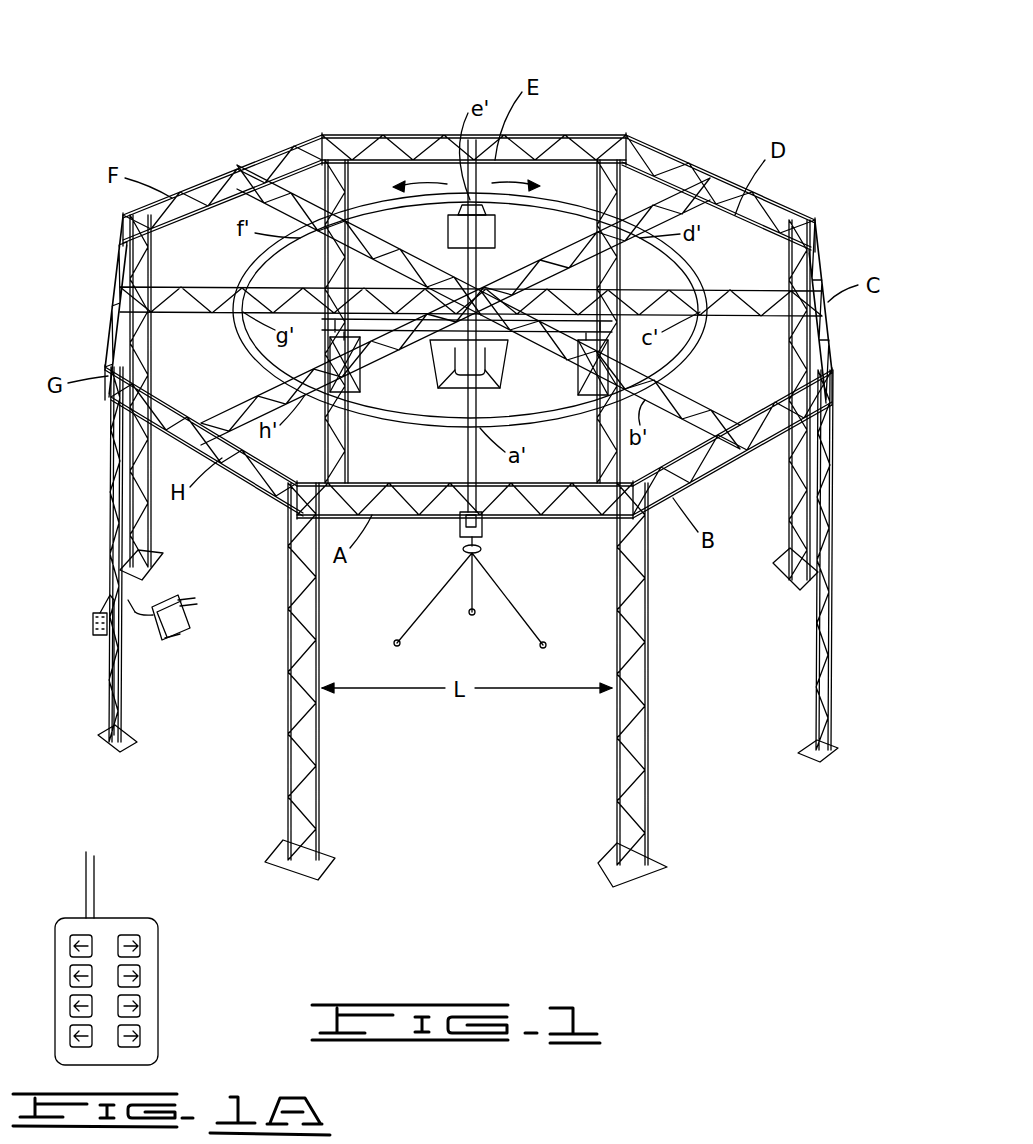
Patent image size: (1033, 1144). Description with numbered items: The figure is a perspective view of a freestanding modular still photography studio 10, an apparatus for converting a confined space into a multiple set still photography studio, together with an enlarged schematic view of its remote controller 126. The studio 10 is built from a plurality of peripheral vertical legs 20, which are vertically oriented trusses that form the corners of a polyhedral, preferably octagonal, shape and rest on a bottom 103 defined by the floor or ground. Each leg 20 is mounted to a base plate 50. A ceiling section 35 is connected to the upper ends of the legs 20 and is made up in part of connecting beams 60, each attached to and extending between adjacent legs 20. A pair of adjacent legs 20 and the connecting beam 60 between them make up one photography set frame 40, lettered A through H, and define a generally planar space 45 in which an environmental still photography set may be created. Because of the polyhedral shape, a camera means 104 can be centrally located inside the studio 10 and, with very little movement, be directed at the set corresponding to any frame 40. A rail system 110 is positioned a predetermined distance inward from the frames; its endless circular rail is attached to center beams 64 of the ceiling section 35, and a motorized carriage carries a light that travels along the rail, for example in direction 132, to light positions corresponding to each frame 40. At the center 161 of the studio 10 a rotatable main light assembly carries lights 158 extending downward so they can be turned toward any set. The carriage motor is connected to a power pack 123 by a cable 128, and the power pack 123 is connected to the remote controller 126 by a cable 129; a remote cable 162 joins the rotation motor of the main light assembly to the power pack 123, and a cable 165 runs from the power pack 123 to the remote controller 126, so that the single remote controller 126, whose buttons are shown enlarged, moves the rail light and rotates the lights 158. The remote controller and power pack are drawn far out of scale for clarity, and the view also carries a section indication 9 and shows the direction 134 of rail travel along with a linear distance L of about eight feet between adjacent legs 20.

In FIG. 1, the freestanding modular still photography studio 10 is at (697, 72).
In FIG. 1, the vertical legs 20 is at (645, 172).
In FIG. 1, the ceiling section 35 is at (471, 305).
In FIG. 1, the photography set frame 40 is at (513, 180).
In FIG. 1, the space 45 is at (375, 180).
In FIG. 1, the base plate 50 is at (838, 748).
In FIG. 1, the connecting beam 60 is at (235, 172).
In FIG. 1, the center beams 64 is at (683, 388).
In FIG. 1, the bottom 103 is at (750, 262).
In FIG. 1, the camera means 104 is at (455, 530).
In FIG. 1, the rail system 110 is at (420, 432).
In FIG. 1, the power pack 123 is at (180, 624).
In FIG. 1, the remote controller 126 is at (95, 632).
In FIG. 1A, the remote controller 126 is at (160, 988).
In FIG. 1, the cable 128 is at (190, 595).
In FIG. 1, the cable 129 is at (135, 612).
In FIG. 1A, the cable 129 is at (85, 852).
In FIG. 1, the direction 132 is at (517, 178).
In FIG. 1, the rotation direction arrow 134 is at (405, 187).
In FIG. 1, the lights 158 is at (500, 385).
In FIG. 1, the center 161 is at (485, 272).
In FIG. 1, the remote cable 162 is at (187, 600).
In FIG. 1, the cable 165 is at (140, 615).
In FIG. 1A, the cable 165 is at (92, 866).
In FIG. 1, the section line 9- 9 is at (407, 108).